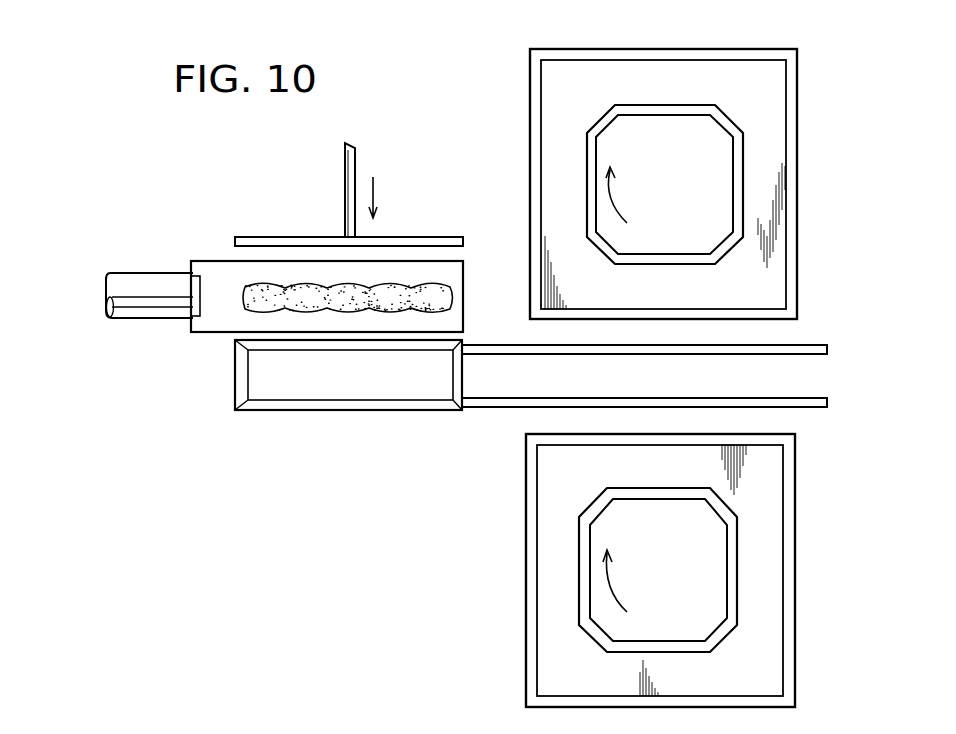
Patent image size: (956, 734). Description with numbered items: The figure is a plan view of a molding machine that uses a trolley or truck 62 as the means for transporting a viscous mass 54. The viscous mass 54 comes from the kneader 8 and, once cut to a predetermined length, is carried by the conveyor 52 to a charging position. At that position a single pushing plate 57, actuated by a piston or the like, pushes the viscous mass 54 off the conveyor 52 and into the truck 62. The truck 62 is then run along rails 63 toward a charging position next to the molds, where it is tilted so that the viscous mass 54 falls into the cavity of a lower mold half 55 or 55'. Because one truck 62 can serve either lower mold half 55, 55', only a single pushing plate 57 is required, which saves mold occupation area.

The kneader 8 is at (142, 277).
The conveyor 52 is at (203, 262).
The viscous mass 54 is at (452, 297).
The pushing plate 57 is at (351, 152).
The truck 62 is at (346, 411).
The rails 63 is at (493, 408).
The lower mold half 55 is at (636, 570).
The lower mold half 55' is at (640, 184).